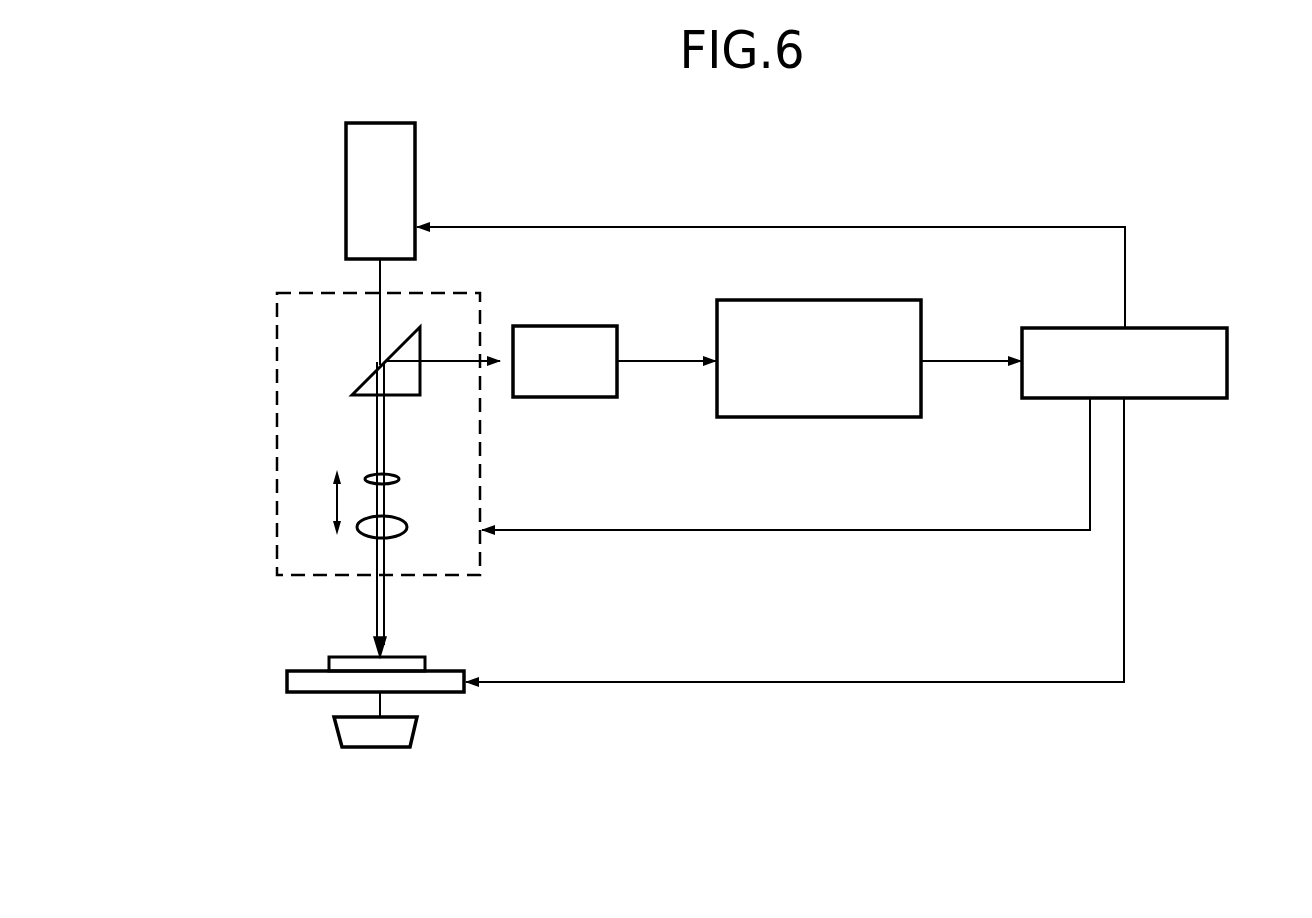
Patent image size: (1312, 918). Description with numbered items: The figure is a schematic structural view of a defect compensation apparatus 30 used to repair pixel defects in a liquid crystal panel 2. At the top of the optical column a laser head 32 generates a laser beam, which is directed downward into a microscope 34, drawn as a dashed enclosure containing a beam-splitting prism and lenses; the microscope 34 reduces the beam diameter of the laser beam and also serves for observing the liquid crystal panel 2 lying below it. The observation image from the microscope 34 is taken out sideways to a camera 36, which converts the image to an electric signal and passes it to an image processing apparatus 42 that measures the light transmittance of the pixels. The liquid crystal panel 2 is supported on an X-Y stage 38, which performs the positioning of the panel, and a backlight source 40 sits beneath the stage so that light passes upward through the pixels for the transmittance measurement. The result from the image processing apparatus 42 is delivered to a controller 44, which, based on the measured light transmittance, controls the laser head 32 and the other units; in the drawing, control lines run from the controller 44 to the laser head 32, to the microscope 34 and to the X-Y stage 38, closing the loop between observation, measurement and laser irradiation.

The defect compensation apparatus 30 is at (1122, 183).
The laser head 32 is at (417, 177).
The microscope 34 is at (276, 436).
The camera 36 is at (552, 397).
The image processing apparatus 42 is at (872, 417).
The controller 44 is at (1227, 350).
The liquid crystal panel 2 is at (343, 655).
The X-Y stage 38 is at (287, 679).
The backlight source 40 is at (377, 747).